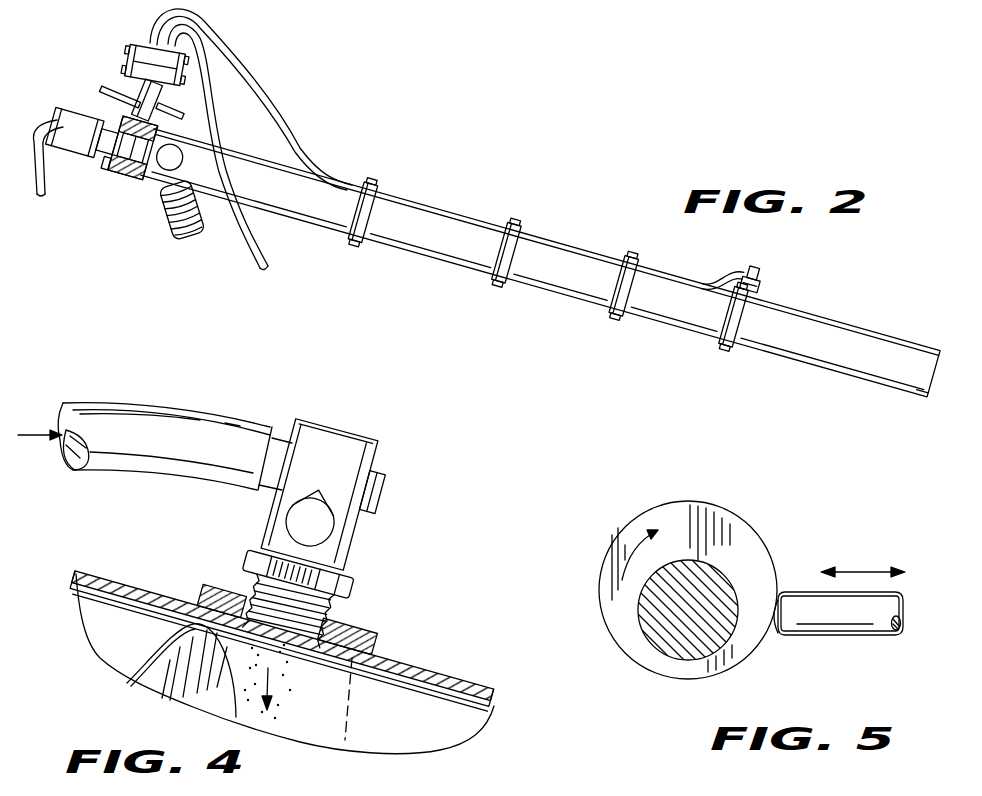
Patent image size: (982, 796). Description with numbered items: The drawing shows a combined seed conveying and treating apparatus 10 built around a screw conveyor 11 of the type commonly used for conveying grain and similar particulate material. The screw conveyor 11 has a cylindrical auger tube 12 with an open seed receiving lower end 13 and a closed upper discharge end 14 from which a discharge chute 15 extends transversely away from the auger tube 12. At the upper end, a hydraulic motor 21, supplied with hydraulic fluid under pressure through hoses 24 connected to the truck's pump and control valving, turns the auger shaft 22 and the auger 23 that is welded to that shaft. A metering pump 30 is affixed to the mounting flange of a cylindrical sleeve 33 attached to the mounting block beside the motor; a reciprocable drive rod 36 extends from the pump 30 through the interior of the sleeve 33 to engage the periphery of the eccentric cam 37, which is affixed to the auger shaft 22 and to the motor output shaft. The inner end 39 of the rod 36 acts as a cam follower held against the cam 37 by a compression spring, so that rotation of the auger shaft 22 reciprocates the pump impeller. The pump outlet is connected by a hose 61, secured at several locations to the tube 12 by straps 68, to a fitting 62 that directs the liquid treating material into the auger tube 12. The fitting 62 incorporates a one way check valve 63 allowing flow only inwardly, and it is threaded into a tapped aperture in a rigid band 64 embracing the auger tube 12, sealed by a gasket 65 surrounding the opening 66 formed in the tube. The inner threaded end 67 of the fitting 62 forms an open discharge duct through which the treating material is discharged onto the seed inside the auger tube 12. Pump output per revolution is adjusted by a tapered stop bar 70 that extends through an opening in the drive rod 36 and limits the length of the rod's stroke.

In FIG. 2, the combined seed conveying and treating apparatus 10 is at (110, 217).
In FIG. 2, the screw conveyor 11 is at (820, 320).
In FIG. 2, the auger tube 12 is at (555, 280).
In FIG. 4, the auger tube 12 is at (407, 668).
In FIG. 2, the open seed receiving lower end 13 is at (913, 394).
In FIG. 2, the closed upper discharge end 14 is at (165, 172).
In FIG. 2, the discharge chute 15 is at (200, 213).
In FIG. 2, the hydraulic motor 21 is at (76, 123).
In FIG. 5, the auger shaft 22 is at (697, 650).
In FIG. 4, the auger 23 is at (160, 645).
In FIG. 2, the hoses 24 is at (48, 178).
In FIG. 2, the metering pump 30 is at (133, 53).
In FIG. 2, the cylindrical sleeve 33 is at (181, 112).
In FIG. 5, the reciprocable drive rod 36 is at (860, 625).
In FIG. 5, the cam 37 is at (755, 535).
In FIG. 5, the inner end 39 is at (778, 632).
In FIG. 2, the hose 61 is at (465, 210).
In FIG. 4, the hose 61 is at (187, 415).
In FIG. 2, the fitting 62 is at (753, 273).
In FIG. 4, the fitting 62 is at (374, 452).
In FIG. 4, the one way check valve 63 is at (325, 548).
In FIG. 2, the rigid band 64 is at (735, 345).
In FIG. 4, the rigid band 64 is at (350, 622).
In FIG. 4, the gasket 65 is at (193, 600).
In FIG. 4, the opening 66 is at (317, 657).
In FIG. 4, the inner threaded end 67 is at (252, 582).
In FIG. 2, the straps 68 is at (363, 240).
In FIG. 2, the stop bar 70 is at (100, 92).